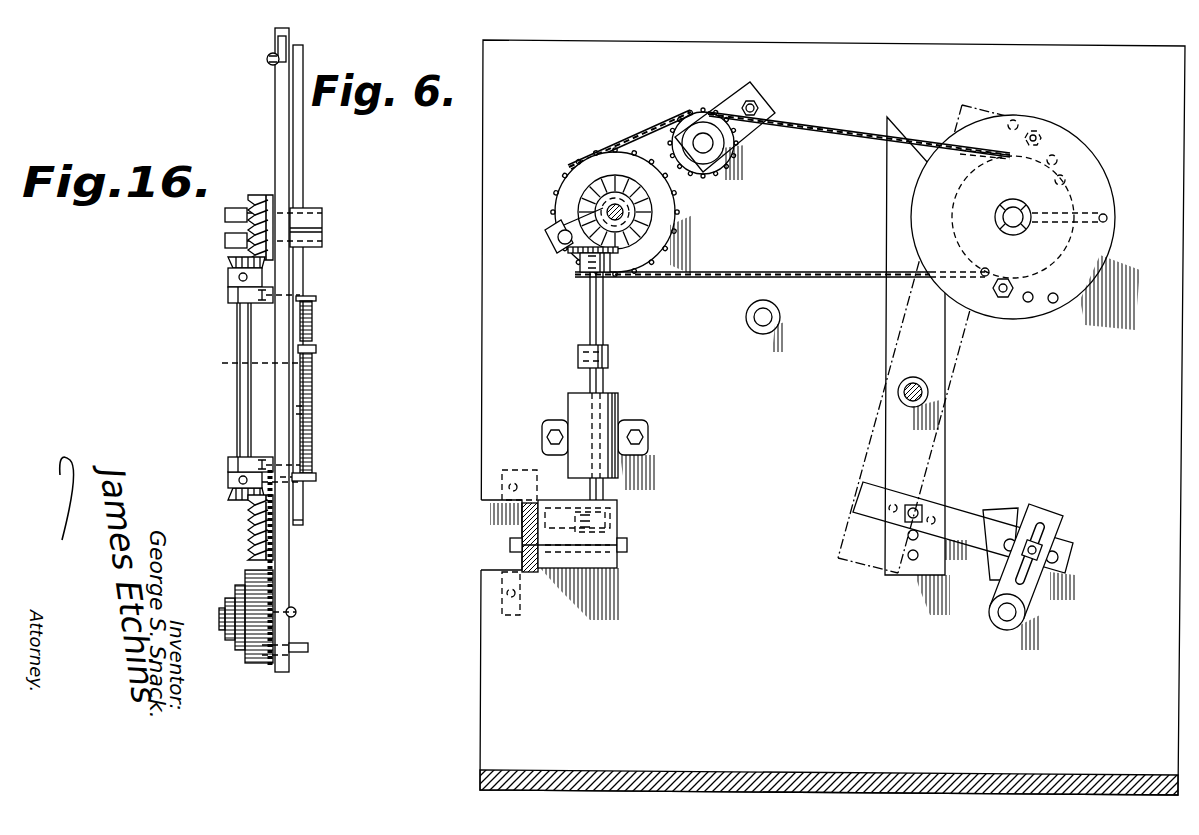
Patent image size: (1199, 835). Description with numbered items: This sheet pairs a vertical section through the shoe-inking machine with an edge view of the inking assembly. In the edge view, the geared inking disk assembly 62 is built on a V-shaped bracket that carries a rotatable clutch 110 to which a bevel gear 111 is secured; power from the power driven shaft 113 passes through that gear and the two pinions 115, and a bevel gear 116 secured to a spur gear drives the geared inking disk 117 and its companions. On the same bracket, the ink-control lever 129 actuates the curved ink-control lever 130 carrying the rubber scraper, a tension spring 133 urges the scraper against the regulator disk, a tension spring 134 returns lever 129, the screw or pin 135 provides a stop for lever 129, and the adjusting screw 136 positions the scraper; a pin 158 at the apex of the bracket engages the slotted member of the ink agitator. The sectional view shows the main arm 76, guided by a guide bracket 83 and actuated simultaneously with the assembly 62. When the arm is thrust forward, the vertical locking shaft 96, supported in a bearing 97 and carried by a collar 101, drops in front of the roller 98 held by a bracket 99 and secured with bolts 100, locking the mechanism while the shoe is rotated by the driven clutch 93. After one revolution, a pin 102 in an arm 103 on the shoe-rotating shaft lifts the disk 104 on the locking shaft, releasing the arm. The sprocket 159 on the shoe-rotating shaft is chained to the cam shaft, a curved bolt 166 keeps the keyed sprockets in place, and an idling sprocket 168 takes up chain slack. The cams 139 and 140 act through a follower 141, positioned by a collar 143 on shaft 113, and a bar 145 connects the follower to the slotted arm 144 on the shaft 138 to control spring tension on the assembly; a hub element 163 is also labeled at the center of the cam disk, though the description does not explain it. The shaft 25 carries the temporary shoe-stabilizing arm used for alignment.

In FIG. 6, the shaft 25 is at (755, 318).
In FIG. 16, the geared inking disk assembly 62 is at (290, 272).
In FIG. 6, the main arm 76 is at (530, 572).
In FIG. 6, the guide bracket 83 is at (503, 517).
In FIG. 6, the driven clutch 93 is at (640, 232).
In FIG. 6, the vertical locking shaft 96 is at (604, 308).
In FIG. 6, the bearing 97 is at (620, 405).
In FIG. 6, the roller 98 is at (617, 505).
In FIG. 6, the bracket 99 is at (617, 565).
In FIG. 6, the bolts 100 is at (628, 546).
In FIG. 6, the collar 101 is at (610, 354).
In FIG. 6, the pin 102 is at (558, 232).
In FIG. 6, the arm 103 is at (548, 244).
In FIG. 6, the disk 104 is at (580, 268).
In FIG. 16, the rotatable clutch 110 is at (225, 216).
In FIG. 16, the bevel gear 111 is at (248, 198).
In FIG. 6, the power driven shaft 113 is at (900, 395).
In FIG. 16, the pinions 115 is at (232, 258).
In FIG. 16, the bevel gear 116 is at (247, 540).
In FIG. 16, the geared inking disk 117 is at (245, 582).
In FIG. 16, the ink-control lever 129 is at (303, 166).
In FIG. 16, the ink-control lever 130 is at (302, 506).
In FIG. 16, the tension spring 133 is at (312, 458).
In FIG. 16, the tension spring 134 is at (310, 318).
In FIG. 16, the screw or pin 135 is at (246, 380).
In FIG. 16, the adjusting screw 136 is at (304, 410).
In FIG. 6, the shaft 138 is at (1005, 622).
In FIG. 6, the cam 139 is at (1003, 297).
In FIG. 6, the cam 140 is at (1040, 137).
In FIG. 6, the follower 141 is at (886, 330).
In FIG. 6, the collar 143 is at (904, 390).
In FIG. 6, the arm 144 is at (1040, 590).
In FIG. 6, the bar 145 is at (1068, 556).
In FIG. 16, the pin 158 is at (308, 648).
In FIG. 6, the sprocket 159 is at (665, 203).
In FIG. 6, the hub 163 is at (1016, 230).
In FIG. 6, the curved bolt 166 is at (1106, 214).
In FIG. 6, the idling sprocket 168 is at (725, 162).